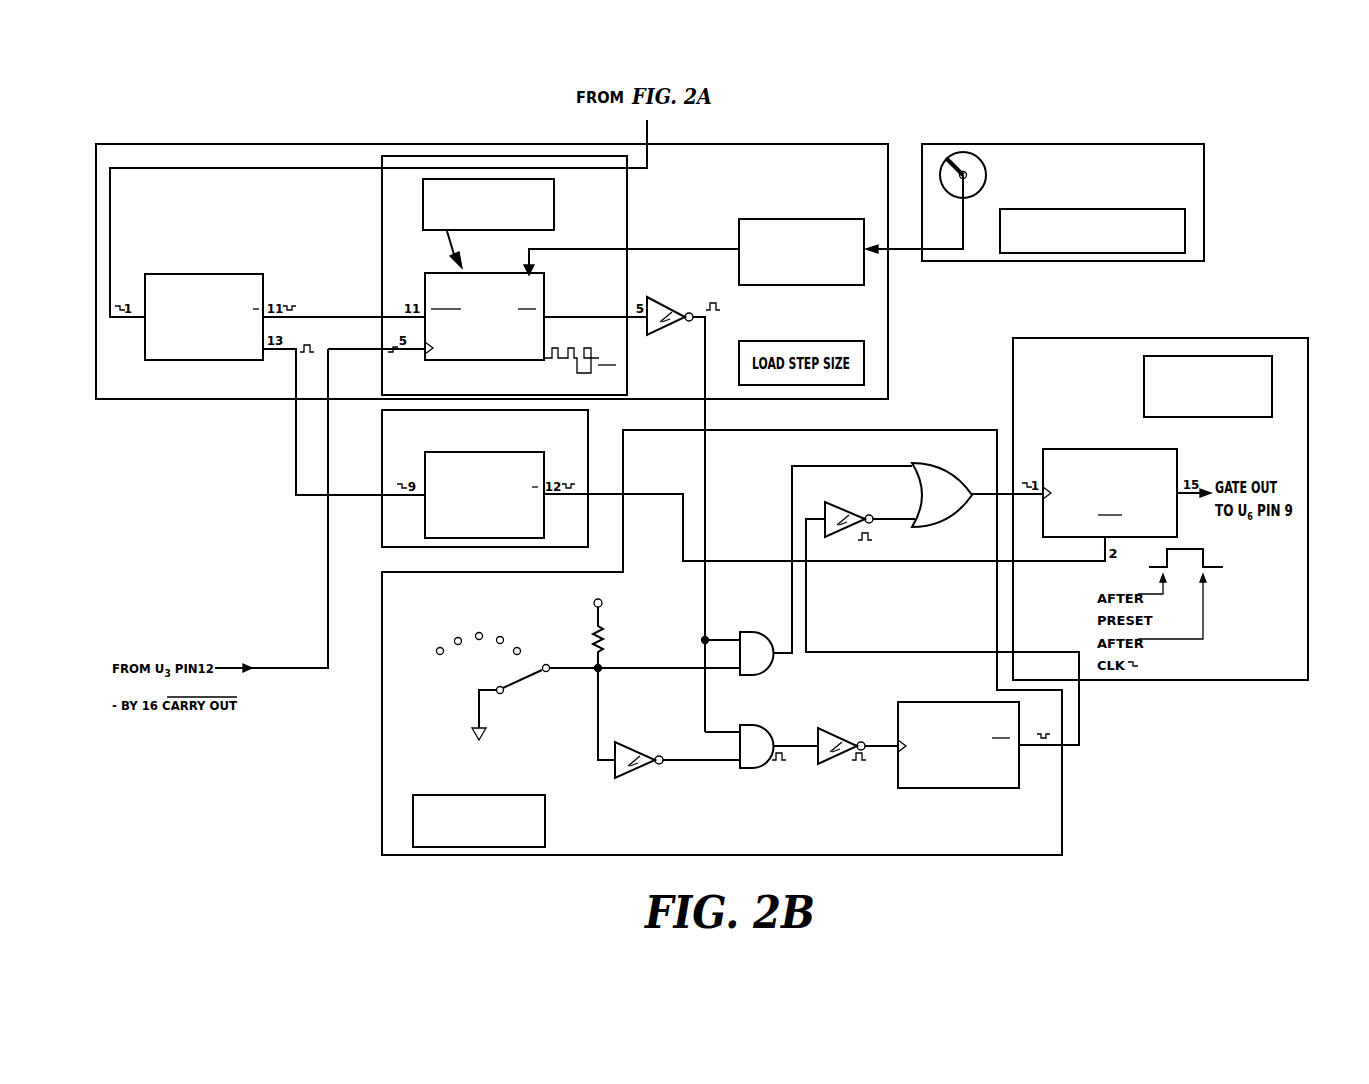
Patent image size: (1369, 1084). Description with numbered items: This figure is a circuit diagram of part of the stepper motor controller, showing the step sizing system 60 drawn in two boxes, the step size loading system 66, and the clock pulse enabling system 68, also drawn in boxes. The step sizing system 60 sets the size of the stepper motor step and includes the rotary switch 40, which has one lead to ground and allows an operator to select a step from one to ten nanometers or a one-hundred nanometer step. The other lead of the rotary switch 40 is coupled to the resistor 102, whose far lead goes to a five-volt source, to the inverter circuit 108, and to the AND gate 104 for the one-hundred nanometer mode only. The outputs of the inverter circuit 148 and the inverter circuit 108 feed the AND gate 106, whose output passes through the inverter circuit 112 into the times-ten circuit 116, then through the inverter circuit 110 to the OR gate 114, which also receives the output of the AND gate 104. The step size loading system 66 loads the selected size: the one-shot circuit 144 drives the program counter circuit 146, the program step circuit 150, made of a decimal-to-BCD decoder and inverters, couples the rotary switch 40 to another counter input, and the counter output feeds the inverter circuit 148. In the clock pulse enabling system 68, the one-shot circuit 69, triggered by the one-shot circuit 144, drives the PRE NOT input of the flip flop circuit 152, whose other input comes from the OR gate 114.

The rotary switch 40 is at (527, 675).
The step sizing system 60 is at (1200, 158).
The step size loading system 66 is at (118, 402).
The clock pulse enabling system 68 is at (1013, 361).
The one-shot circuit 69 is at (430, 457).
The resistor 102 is at (594, 640).
The AND gate 104 is at (758, 664).
The AND gate 106 is at (748, 772).
The inverter circuit 108 is at (636, 770).
The inverter circuit 110 is at (833, 534).
The inverter circuit 112 is at (829, 768).
The OR gate 114 is at (935, 517).
The times-ten circuit 116 is at (906, 790).
The one-shot circuit 144 is at (264, 281).
The program counter circuit 146 is at (430, 281).
The inverter circuit 148 is at (658, 330).
The program step circuit 150 is at (750, 226).
The flip flop circuit 152 is at (1060, 452).